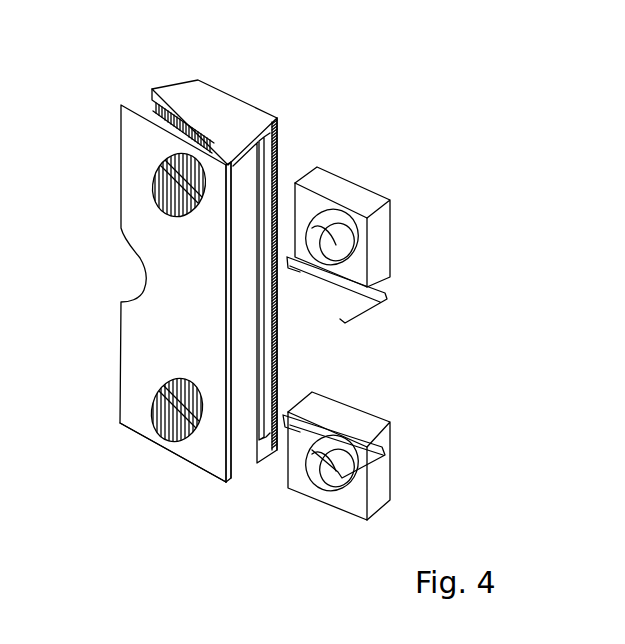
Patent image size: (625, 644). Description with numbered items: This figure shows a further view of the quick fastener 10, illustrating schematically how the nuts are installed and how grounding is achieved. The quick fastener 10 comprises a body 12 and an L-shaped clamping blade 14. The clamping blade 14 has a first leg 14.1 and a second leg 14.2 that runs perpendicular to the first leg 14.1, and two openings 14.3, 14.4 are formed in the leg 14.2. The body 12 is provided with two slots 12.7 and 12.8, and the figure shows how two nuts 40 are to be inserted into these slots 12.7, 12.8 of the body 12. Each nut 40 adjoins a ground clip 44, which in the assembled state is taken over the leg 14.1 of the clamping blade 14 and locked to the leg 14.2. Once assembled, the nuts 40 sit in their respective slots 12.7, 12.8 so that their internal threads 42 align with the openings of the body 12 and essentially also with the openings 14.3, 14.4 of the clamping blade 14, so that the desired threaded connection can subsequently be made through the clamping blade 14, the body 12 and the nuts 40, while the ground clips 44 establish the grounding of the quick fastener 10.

The quick fastener 10 is at (214, 62).
The body 12 is at (225, 115).
The slot of the body 12.7 is at (275, 155).
The slot of the body 12.8 is at (268, 403).
The clamping blade 14 is at (173, 333).
The first leg of the clamping blade 14.1 is at (235, 458).
The second leg of the clamping blade 14.2 is at (140, 422).
The opening in the clamping blade 14.3 is at (153, 408).
The opening in the clamping blade 14.4 is at (155, 177).
The nut 40 is at (325, 182).
The internal thread 42 is at (335, 227).
The ground clip 44 is at (373, 313).